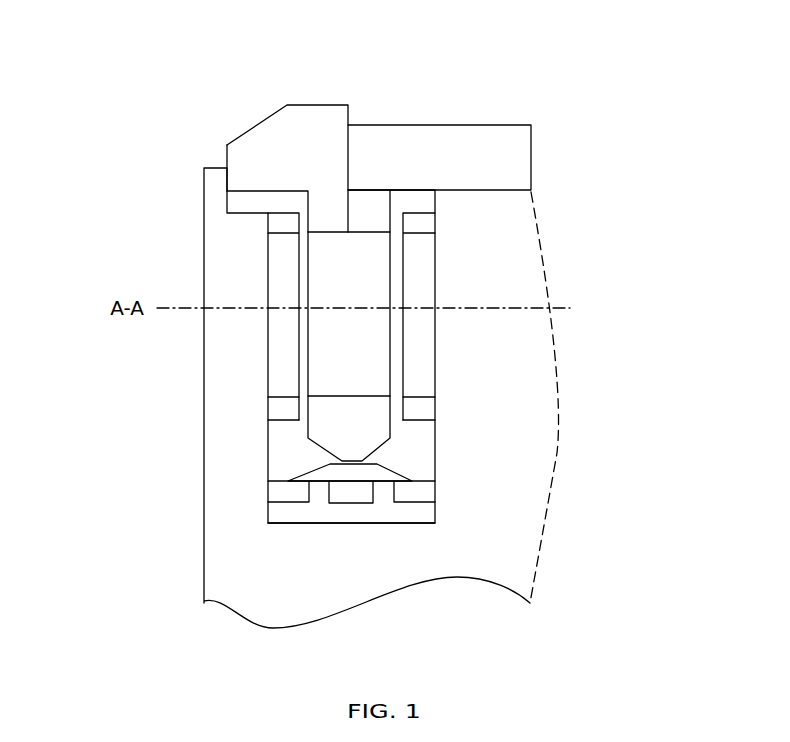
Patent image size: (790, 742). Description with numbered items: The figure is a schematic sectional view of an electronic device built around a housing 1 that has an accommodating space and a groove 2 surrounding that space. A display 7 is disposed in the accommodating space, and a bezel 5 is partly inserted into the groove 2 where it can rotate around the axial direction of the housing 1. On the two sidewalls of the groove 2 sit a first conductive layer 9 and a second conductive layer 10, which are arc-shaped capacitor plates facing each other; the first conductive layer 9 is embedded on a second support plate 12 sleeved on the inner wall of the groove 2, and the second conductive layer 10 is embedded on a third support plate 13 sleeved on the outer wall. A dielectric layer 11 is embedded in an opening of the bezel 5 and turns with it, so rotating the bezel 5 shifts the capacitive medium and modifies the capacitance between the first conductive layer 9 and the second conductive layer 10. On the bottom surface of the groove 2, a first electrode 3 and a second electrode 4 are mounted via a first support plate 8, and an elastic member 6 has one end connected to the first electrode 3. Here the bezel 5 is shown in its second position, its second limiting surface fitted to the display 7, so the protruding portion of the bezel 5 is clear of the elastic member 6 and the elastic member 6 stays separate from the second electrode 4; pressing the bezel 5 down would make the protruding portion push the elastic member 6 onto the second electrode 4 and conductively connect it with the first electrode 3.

The housing 1 is at (223, 237).
The groove 2 is at (408, 452).
The first electrode 3 is at (298, 489).
The second electrode 4 is at (350, 503).
The bezel 5 is at (275, 110).
The elastic member 6 is at (310, 471).
The display 7 is at (505, 145).
The first support plate 8 is at (390, 517).
The first conductive layer 9 is at (422, 272).
The second conductive layer 10 is at (282, 263).
The dielectric layer 11 is at (378, 360).
The second support plate 12 is at (422, 406).
The third support plate 13 is at (282, 409).